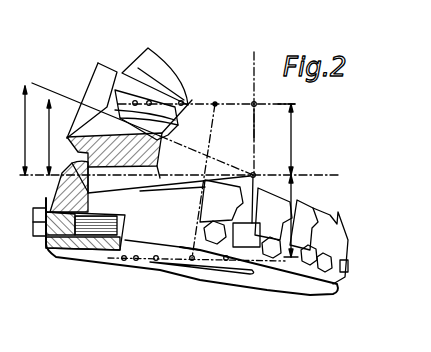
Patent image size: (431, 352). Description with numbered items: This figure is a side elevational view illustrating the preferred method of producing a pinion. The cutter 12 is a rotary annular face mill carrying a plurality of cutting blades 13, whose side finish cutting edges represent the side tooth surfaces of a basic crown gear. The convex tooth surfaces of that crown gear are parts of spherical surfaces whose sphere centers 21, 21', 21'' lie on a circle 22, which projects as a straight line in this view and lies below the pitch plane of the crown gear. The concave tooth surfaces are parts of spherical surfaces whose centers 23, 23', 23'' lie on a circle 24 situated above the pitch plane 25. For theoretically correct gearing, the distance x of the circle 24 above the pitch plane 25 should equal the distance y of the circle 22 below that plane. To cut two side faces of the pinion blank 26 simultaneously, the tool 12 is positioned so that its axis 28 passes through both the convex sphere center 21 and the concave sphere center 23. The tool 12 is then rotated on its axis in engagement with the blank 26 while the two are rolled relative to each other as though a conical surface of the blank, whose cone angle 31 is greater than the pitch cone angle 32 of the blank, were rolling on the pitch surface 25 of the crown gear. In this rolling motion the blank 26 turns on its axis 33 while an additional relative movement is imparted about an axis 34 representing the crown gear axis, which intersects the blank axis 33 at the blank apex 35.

The cutter 12 is at (292, 293).
The cutting blades 13 is at (310, 206).
The sphere center 21 is at (196, 285).
The sphere center 21' is at (234, 287).
The sphere center 21'' is at (158, 277).
The circle 22 is at (110, 258).
The center of concave spherical tooth surface 23 is at (229, 95).
The center of concave spherical tooth surface 23' is at (198, 94).
The center of concave spherical tooth surface 23'' is at (167, 89).
The circle 24 is at (280, 103).
The pitch plane 25 is at (35, 174).
The pinion blank 26 is at (152, 60).
The tool axis 28 is at (210, 140).
The cone angle 31 is at (30, 130).
The pitch cone angle 32 is at (54, 137).
The blank axis 33 is at (178, 145).
The crown gear axis 34 is at (255, 128).
The blank apex 35 is at (255, 172).
The distance x is at (286, 139).
The distance y is at (292, 181).